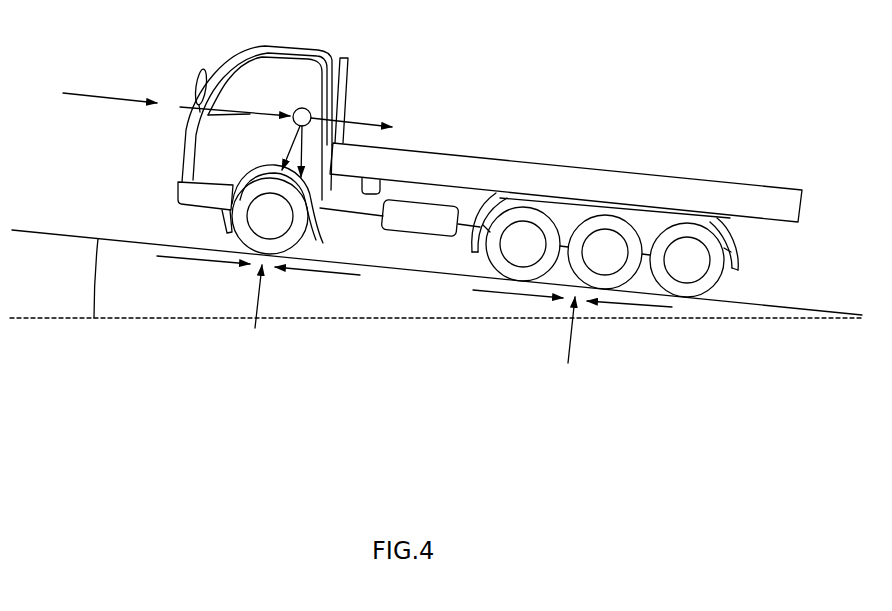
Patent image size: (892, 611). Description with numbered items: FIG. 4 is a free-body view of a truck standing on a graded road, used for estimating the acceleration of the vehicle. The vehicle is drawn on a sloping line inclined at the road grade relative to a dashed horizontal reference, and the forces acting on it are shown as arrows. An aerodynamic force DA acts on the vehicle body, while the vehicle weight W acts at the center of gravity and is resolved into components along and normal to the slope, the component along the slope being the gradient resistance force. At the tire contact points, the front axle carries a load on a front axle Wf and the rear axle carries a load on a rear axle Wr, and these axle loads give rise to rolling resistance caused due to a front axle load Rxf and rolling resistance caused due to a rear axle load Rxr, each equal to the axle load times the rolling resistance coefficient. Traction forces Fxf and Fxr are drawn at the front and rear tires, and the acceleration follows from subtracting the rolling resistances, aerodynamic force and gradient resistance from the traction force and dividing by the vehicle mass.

The aerodynamic force DA is at (110, 87).
The vehicle weight W is at (315, 151).
The rolling resistance caused due to a front axle load Rxf is at (187, 258).
The front tractive (braking) force Fxf is at (332, 284).
The load on a front axle Wf is at (254, 311).
The rolling resistance caused due to a rear axle load Rxr is at (503, 293).
The load on a rear axle Wr is at (570, 345).
The rear tractive (braking) force Fxr is at (646, 316).